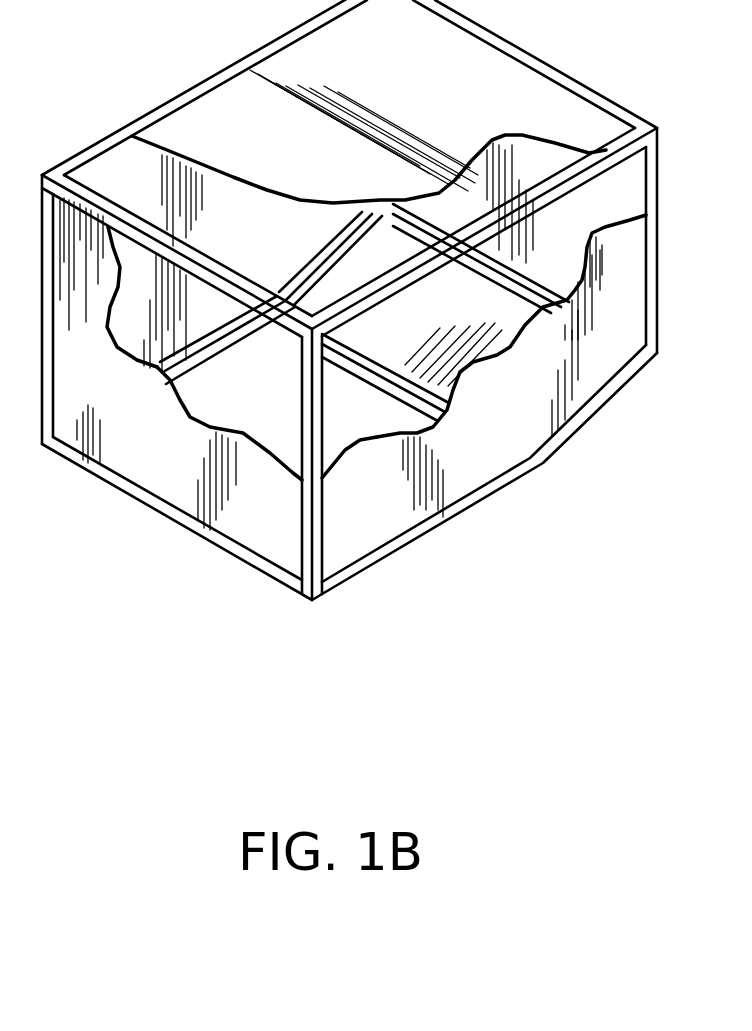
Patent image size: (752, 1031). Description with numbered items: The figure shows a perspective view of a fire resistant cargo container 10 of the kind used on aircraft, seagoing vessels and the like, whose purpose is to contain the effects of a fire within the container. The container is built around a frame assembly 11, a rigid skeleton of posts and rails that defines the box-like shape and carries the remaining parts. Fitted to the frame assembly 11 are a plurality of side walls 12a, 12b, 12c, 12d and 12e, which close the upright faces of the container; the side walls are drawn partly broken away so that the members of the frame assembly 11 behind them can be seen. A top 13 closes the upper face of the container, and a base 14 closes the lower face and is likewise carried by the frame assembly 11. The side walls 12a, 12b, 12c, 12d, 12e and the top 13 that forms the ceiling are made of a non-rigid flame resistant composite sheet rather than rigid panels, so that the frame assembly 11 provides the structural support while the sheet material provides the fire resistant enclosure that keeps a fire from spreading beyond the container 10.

The fire resistant cargo container 10 is at (512, 549).
The frame assembly 11 is at (301, 524).
The side wall 12a is at (159, 448).
The side wall 12b is at (511, 437).
The side wall 12c is at (578, 243).
The side wall 12d is at (259, 237).
The side wall 12e is at (409, 342).
The top 13 is at (421, 79).
The base 14 is at (338, 436).